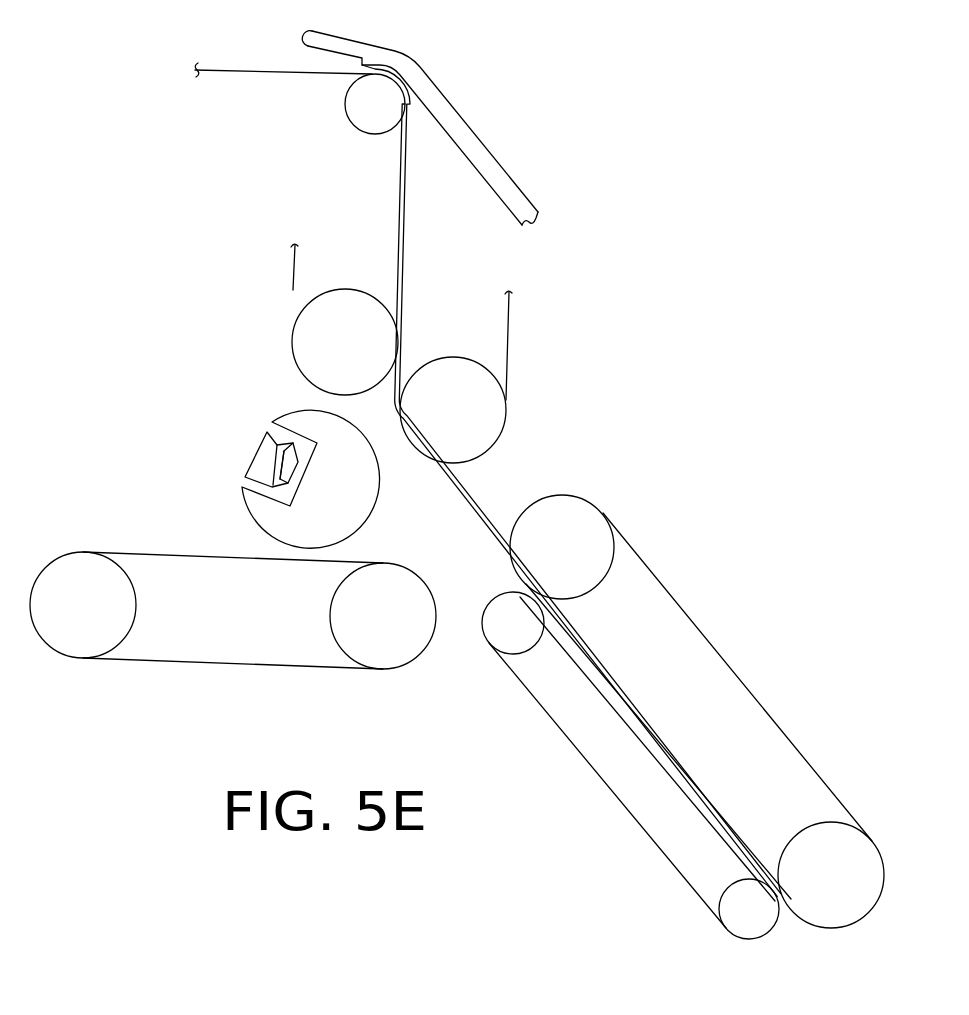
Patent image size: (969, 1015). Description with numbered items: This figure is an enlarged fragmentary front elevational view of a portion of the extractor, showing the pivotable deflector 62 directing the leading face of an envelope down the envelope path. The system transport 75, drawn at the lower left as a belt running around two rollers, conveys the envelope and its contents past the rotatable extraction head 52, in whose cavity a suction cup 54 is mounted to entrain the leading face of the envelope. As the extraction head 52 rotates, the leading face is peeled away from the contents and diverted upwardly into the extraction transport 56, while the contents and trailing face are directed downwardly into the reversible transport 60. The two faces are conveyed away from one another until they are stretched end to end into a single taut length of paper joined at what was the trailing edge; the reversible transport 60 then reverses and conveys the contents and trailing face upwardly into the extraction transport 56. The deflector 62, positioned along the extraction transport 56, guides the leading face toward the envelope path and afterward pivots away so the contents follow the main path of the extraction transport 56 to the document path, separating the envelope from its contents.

The extraction head 52 is at (353, 502).
The suction cup 54 is at (262, 457).
The extraction transport 56 is at (492, 403).
The reversible transport 60 is at (723, 642).
The pivotable deflector 62 is at (470, 140).
The system transport 75 is at (77, 570).